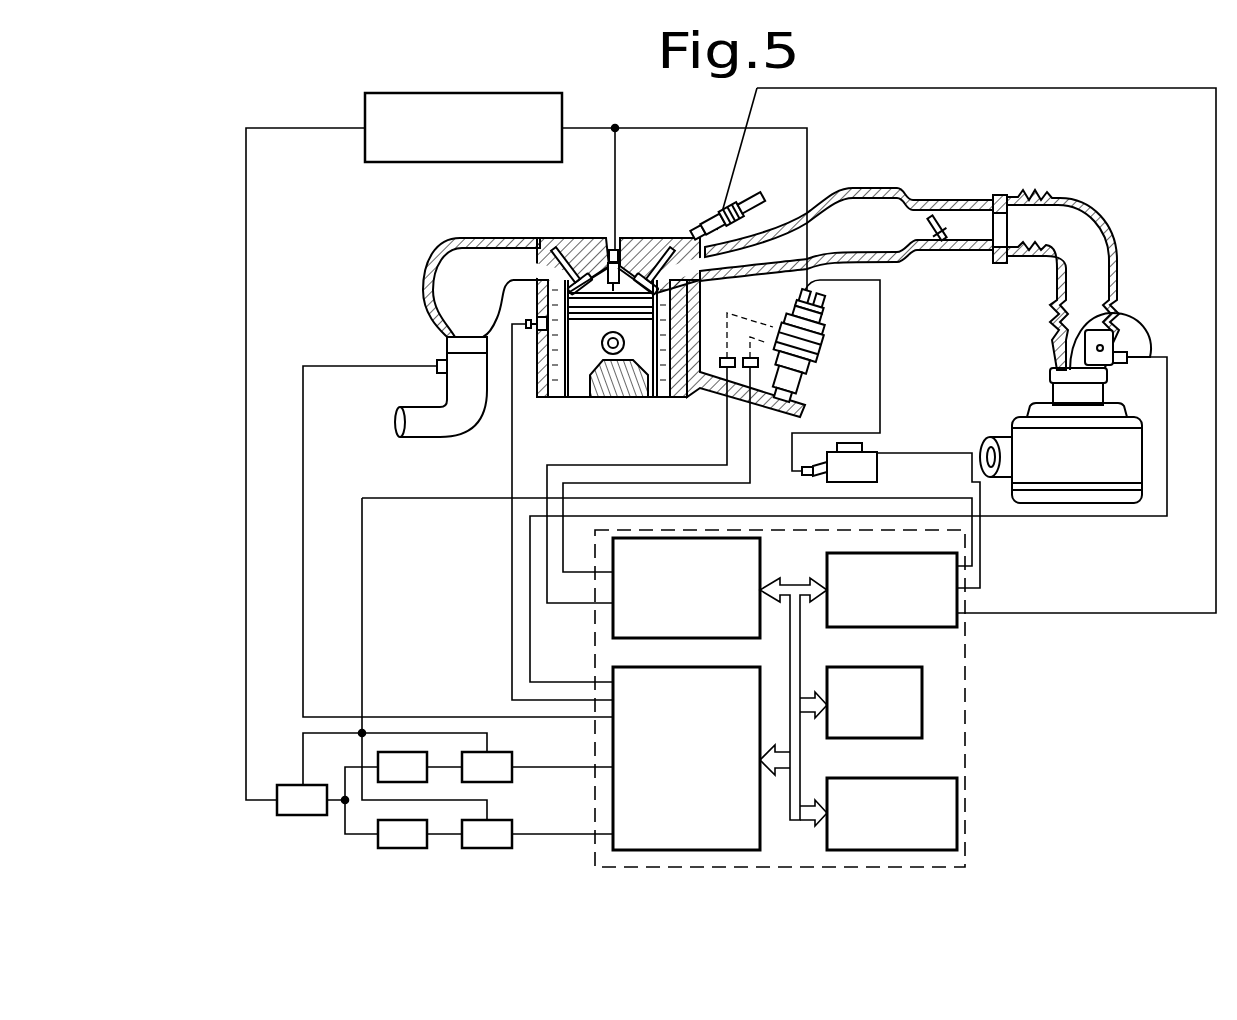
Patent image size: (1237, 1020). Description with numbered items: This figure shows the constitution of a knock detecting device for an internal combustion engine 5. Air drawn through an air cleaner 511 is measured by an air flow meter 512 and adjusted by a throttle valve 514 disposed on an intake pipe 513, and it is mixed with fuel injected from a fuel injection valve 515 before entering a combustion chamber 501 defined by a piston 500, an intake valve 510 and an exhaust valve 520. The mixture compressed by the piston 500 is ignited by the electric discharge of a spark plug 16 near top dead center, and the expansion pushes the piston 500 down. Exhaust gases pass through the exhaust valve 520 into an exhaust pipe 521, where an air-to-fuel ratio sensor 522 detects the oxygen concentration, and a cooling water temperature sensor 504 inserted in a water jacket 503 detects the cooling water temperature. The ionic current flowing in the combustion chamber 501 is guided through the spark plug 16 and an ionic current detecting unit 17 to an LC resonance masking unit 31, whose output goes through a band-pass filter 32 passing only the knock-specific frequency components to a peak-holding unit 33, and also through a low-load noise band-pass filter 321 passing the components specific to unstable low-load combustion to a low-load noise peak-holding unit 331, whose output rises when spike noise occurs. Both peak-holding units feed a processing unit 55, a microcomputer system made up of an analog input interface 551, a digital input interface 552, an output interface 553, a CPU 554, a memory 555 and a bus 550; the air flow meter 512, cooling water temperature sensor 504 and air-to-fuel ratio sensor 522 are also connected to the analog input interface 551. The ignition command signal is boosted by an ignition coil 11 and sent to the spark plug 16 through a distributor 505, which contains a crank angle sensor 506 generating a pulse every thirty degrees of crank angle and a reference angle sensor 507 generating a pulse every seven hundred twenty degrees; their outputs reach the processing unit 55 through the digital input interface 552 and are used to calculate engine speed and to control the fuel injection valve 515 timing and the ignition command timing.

The internal combustion engine 5 is at (631, 232).
The ignition coil 11 is at (880, 472).
The spark plug 16 is at (611, 248).
The ionic current detecting unit 17 is at (365, 148).
The LC resonance masking unit 31 is at (277, 813).
The band-pass filter 32 is at (410, 782).
The peak-holding unit 33 is at (513, 760).
The low-load noise band-pass filter 321 is at (377, 843).
The low-load noise peak-holding unit 331 is at (512, 830).
The processing unit 55 is at (970, 737).
The piston 500 is at (643, 367).
The combustion chamber 501 is at (578, 252).
The water jacket 503 is at (553, 398).
The cooling water temperature sensor 504 is at (535, 332).
The distributor 505 is at (818, 364).
The crank angle sensor 506 is at (719, 373).
The reference angle sensor 507 is at (803, 402).
The intake valve 510 is at (656, 238).
The air cleaner 511 is at (1010, 428).
The air flow meter 512 is at (1142, 290).
The intake pipe 513 is at (972, 200).
The throttle valve 514 is at (928, 240).
The fuel injection valve 515 is at (745, 203).
The exhaust valve 520 is at (542, 243).
The exhaust pipe 521 is at (430, 262).
The air-to-fuel ratio sensor 522 is at (438, 362).
The bus 550 is at (792, 582).
The analog input interface 551 is at (678, 667).
The digital input interface 552 is at (665, 638).
The output interface 553 is at (848, 630).
The CPU 554 is at (848, 740).
The memory 555 is at (827, 840).